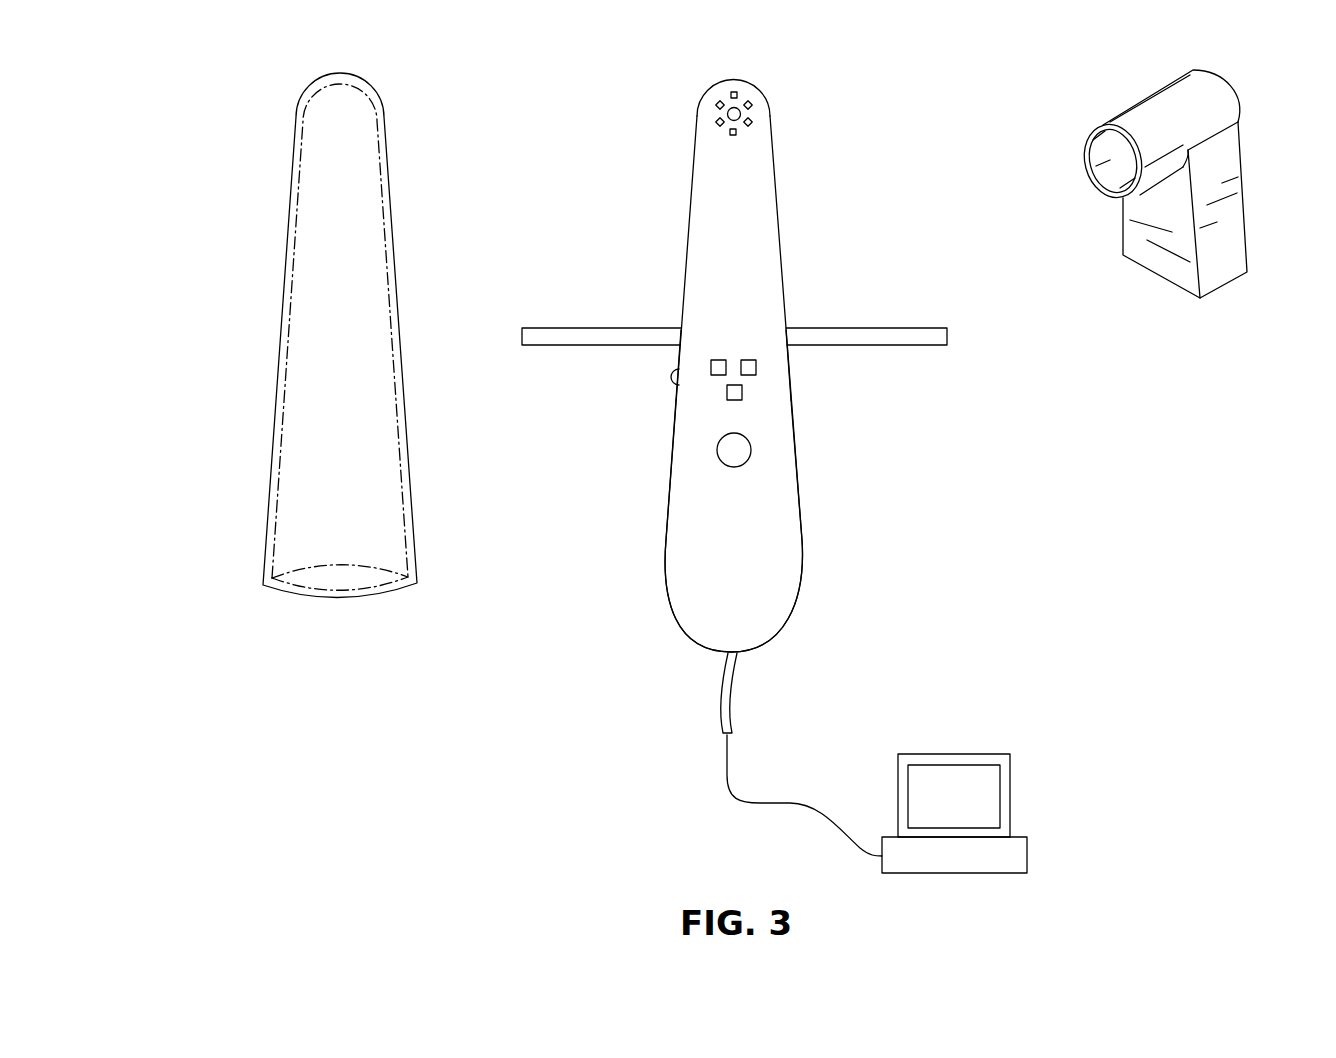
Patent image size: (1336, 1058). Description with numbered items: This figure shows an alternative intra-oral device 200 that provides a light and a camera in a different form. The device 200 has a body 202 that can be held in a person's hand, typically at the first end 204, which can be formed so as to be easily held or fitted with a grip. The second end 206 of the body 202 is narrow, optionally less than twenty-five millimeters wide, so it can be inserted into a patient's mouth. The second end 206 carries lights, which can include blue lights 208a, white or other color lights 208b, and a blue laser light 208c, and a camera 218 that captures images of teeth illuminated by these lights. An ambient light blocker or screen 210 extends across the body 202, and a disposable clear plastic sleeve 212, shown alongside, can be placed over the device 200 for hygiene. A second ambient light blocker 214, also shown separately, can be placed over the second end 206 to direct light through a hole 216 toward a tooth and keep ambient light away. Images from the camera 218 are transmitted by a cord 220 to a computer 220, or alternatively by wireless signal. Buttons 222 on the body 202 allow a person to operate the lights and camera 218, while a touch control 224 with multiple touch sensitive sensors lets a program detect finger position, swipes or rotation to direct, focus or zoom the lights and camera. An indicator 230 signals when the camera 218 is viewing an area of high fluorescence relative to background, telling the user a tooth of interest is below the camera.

The intra-oral device 200 is at (825, 444).
The body 202 is at (752, 333).
The first end 204 is at (797, 507).
The second end 206 is at (775, 165).
The lights 208a is at (755, 98).
The lights 208b is at (755, 105).
The light 208c is at (754, 124).
The ambient light blocker or screen 210 is at (947, 337).
The sleeve 212 is at (282, 337).
The second ambient light blocker 214 is at (1137, 232).
The hole 216 is at (1108, 163).
The camera 218 is at (727, 92).
The cord / computer 220 is at (725, 693).
The buttons 222 is at (831, 397).
The touch control 224 is at (728, 448).
The indicator 230 is at (676, 380).